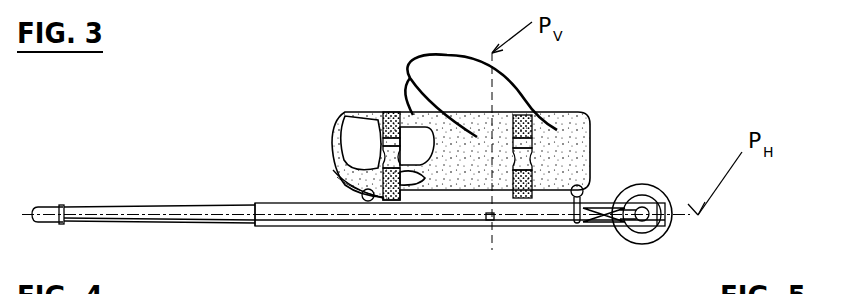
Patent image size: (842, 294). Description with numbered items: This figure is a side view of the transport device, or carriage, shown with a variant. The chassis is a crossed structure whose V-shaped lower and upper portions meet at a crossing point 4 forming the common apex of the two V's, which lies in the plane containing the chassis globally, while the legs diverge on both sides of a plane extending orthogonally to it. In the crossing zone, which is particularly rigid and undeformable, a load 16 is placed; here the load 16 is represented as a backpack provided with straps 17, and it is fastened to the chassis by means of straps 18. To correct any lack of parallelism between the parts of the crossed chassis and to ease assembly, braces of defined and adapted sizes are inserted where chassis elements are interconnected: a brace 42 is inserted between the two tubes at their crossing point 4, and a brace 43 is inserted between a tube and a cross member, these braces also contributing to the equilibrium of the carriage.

The crossing point 4 is at (463, 227).
The brace 42 is at (488, 219).
The brace 43 is at (575, 224).
The load 16 is at (578, 135).
The straps 17 is at (527, 102).
The straps 18 is at (533, 185).